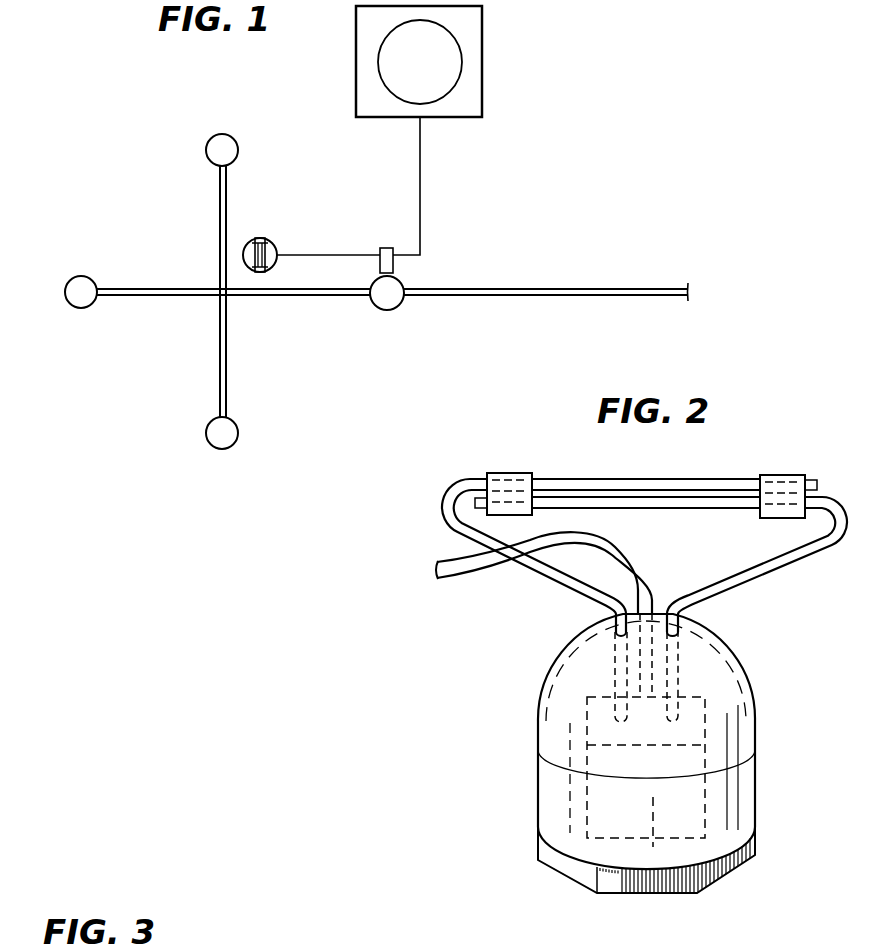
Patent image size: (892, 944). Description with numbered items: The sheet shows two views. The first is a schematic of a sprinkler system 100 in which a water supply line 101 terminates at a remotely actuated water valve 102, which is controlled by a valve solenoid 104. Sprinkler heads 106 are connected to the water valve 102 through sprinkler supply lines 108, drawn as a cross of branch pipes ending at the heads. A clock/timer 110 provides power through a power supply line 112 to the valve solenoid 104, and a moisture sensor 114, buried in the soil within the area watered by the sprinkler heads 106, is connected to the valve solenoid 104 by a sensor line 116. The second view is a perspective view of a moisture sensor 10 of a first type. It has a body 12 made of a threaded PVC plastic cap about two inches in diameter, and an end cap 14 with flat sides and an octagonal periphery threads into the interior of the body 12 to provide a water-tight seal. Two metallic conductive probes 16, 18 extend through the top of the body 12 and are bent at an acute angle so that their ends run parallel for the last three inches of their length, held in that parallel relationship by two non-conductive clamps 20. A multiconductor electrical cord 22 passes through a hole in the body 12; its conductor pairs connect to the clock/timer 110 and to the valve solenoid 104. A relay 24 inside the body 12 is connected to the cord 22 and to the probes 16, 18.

In FIG. 1, the sprinkler system 100 is at (573, 282).
In FIG. 1, the water supply line 101 is at (475, 297).
In FIG. 1, the water valve 102 is at (380, 310).
In FIG. 1, the valve solenoid 104 is at (392, 248).
In FIG. 1, the sprinkler heads 106 is at (233, 153).
In FIG. 1, the sprinkler supply lines 108 is at (220, 198).
In FIG. 1, the clock/timer 110 is at (482, 80).
In FIG. 1, the power supply line 112 is at (420, 152).
In FIG. 1, the moisture sensor 114 is at (272, 248).
In FIG. 1, the sensor line 116 is at (340, 257).
In FIG. 2, the moisture sensor 10 is at (490, 762).
In FIG. 2, the body 12 is at (748, 783).
In FIG. 2, the end cap 14 is at (753, 845).
In FIG. 2, the probe 16 is at (755, 583).
In FIG. 2, the probe 18 is at (570, 590).
In FIG. 2, the clamps 20 is at (497, 474).
In FIG. 2, the multiconductor electrical cord 22 is at (455, 582).
In FIG. 2, the relay 24 is at (710, 722).